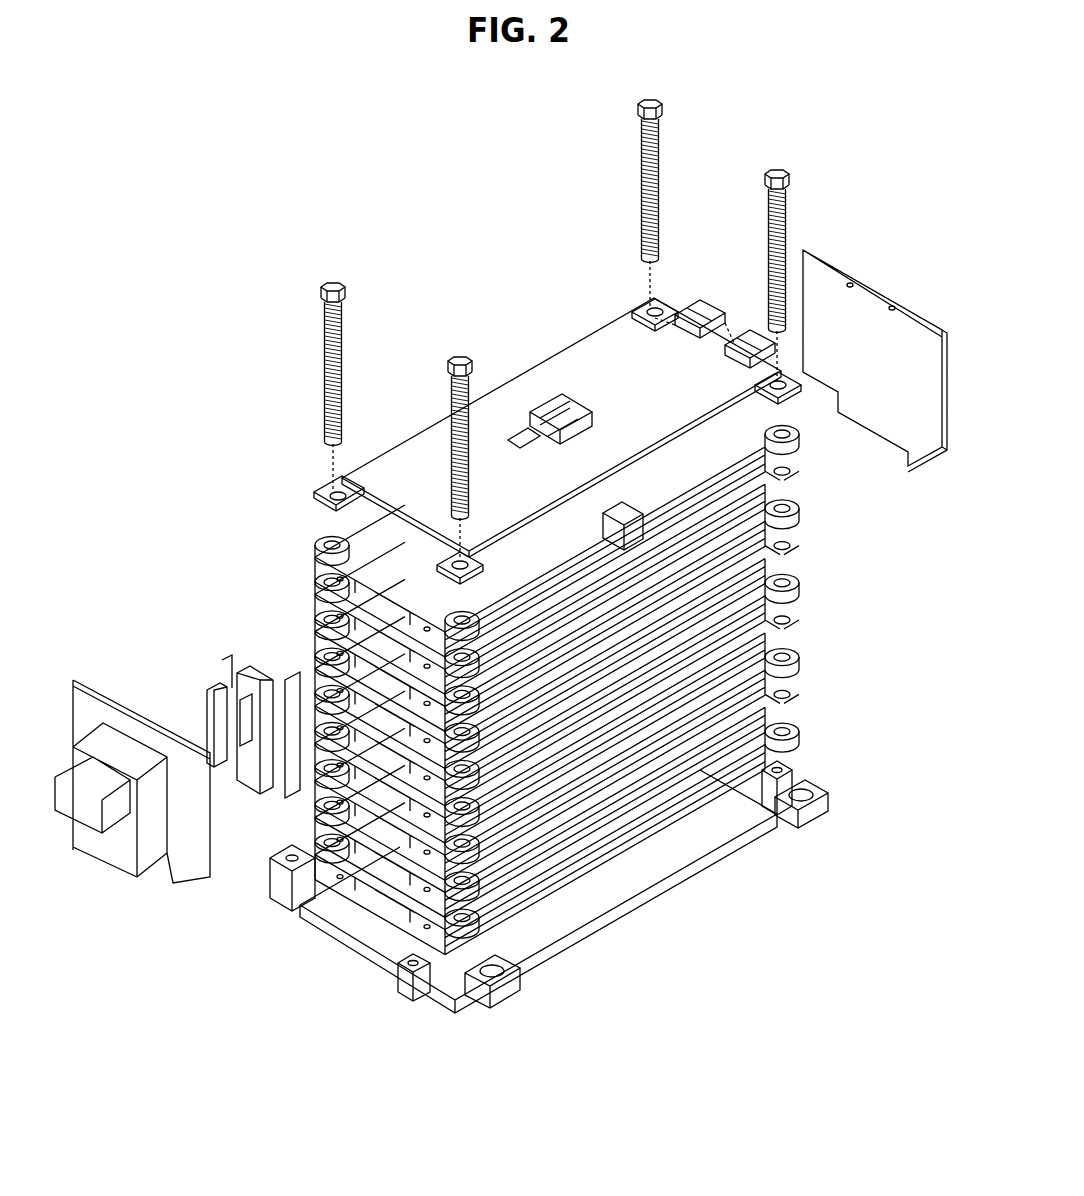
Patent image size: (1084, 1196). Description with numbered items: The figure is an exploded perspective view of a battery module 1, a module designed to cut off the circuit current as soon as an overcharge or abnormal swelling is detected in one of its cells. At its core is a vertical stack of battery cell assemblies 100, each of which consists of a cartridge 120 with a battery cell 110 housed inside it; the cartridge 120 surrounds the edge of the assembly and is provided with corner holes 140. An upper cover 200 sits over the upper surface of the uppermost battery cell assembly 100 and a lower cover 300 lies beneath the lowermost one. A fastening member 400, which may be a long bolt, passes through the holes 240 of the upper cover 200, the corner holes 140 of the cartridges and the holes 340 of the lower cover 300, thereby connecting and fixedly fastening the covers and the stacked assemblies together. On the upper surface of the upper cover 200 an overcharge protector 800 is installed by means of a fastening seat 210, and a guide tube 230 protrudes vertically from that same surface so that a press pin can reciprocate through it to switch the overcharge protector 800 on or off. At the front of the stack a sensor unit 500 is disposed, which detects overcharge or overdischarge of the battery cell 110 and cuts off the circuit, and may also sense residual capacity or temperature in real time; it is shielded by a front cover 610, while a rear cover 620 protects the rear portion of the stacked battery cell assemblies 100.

The battery module 1 is at (262, 382).
The battery cell assembly 100 is at (875, 467).
The battery cell 110 is at (800, 463).
The cartridge 120 is at (800, 492).
The corner hole 140 is at (318, 540).
The upper cover 200 is at (627, 318).
The fastening seat 210 is at (603, 425).
The guide tube 230 is at (518, 445).
The hole 240 is at (658, 301).
The lower cover 300 is at (652, 866).
The hole 340 is at (800, 770).
The fastening member 400 is at (333, 284).
The sensor unit 500 is at (208, 672).
The front cover 610 is at (108, 692).
The rear cover 620 is at (842, 285).
The overcharge protector 800 is at (556, 420).